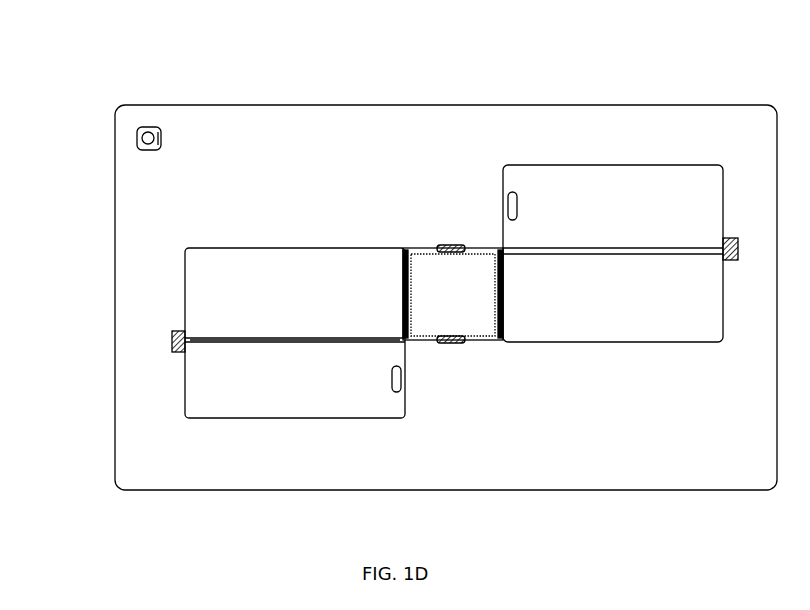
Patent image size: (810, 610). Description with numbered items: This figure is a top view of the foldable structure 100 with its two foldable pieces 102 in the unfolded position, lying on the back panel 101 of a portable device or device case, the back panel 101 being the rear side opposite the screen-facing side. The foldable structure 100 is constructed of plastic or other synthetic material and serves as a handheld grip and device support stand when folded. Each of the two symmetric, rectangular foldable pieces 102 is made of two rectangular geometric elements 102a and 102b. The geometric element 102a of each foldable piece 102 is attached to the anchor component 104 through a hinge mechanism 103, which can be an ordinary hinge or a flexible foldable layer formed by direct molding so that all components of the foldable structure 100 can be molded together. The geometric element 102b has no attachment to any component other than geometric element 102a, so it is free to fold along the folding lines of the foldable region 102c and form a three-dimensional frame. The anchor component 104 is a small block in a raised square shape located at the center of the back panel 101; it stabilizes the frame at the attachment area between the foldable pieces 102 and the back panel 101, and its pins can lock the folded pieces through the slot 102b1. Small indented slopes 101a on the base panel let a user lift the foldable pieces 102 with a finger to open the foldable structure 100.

The foldable structure 100 is at (180, 100).
The back panel 101 is at (135, 192).
The indented slope 101a is at (172, 343).
The foldable piece 102 is at (272, 240).
The geometric element 102a is at (295, 301).
The geometric element 102b is at (295, 384).
The slot 102b1 is at (393, 385).
The foldable region 102c is at (224, 338).
The hinge mechanism 103 is at (397, 285).
The anchor component 104 is at (475, 247).